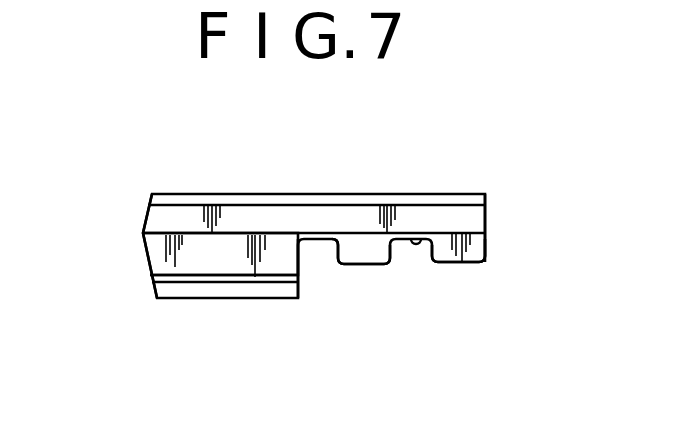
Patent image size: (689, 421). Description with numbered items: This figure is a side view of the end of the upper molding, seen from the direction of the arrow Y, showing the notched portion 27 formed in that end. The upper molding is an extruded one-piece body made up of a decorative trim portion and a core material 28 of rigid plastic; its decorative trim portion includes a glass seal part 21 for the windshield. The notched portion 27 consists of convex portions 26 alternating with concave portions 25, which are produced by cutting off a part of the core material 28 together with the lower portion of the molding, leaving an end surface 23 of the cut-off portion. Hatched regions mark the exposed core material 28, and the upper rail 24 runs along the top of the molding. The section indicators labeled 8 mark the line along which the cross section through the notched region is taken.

The glass seal part 21 is at (143, 248).
The end surface of the cut off portion 23 is at (299, 265).
The top surface of rail 24 is at (257, 217).
The concave portions 25 is at (425, 240).
The convex portions 26 is at (378, 264).
The notched portion 27 is at (498, 242).
The core material 28 is at (160, 260).
The section line for FIG. 8 is at (364, 130).